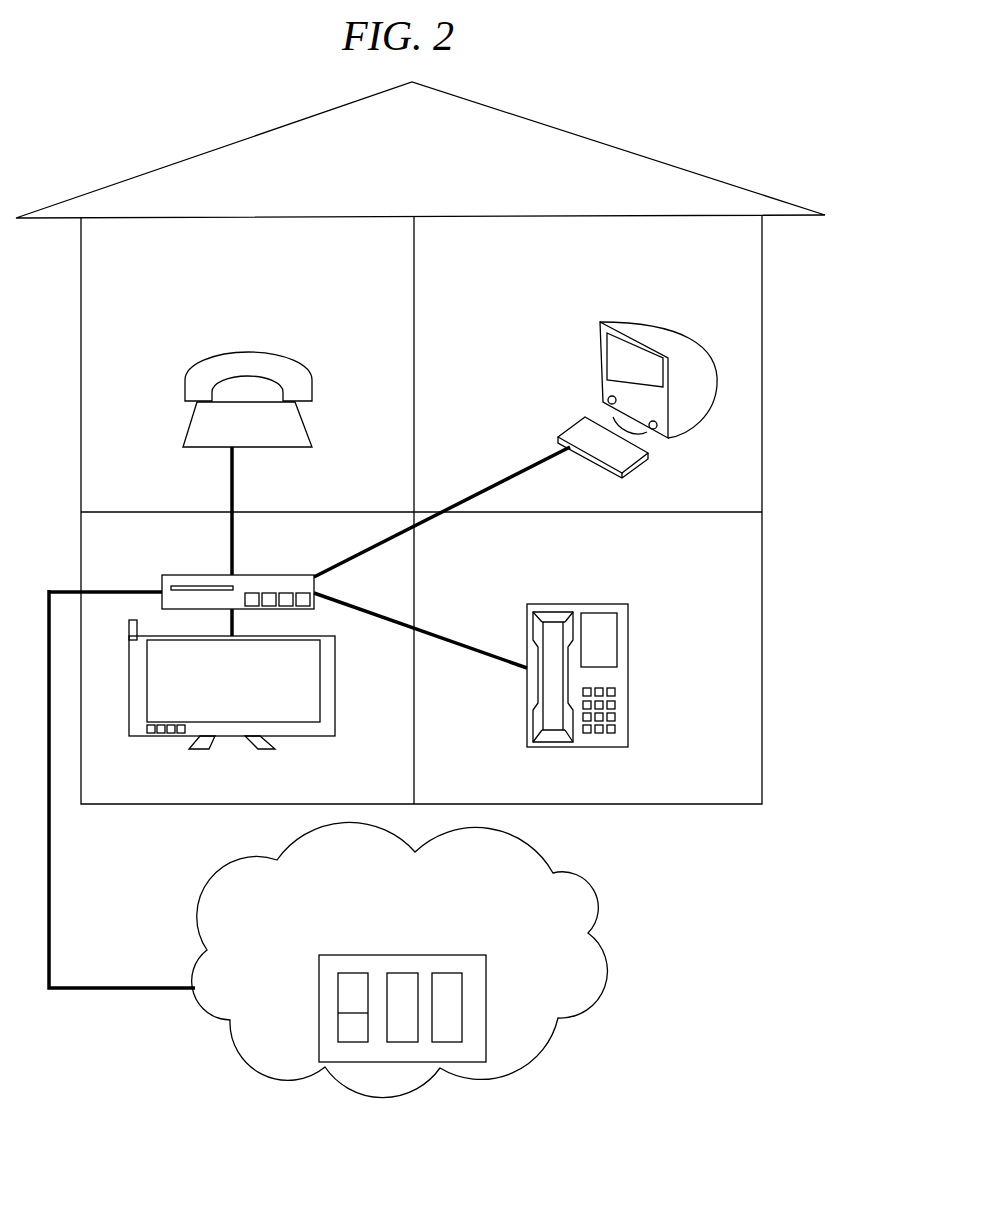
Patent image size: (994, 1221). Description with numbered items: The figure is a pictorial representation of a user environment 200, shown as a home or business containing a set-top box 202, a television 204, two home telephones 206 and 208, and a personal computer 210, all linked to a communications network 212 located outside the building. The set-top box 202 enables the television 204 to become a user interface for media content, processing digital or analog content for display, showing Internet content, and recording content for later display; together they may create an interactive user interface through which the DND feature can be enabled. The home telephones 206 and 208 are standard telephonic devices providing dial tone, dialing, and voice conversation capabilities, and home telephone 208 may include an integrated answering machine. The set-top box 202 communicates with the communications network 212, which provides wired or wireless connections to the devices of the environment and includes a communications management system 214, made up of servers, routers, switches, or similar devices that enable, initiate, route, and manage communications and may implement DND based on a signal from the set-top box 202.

The user environment 200 is at (96, 109).
The set-top box 202 is at (193, 574).
The television 204 is at (246, 685).
The home telephone 206 is at (266, 437).
The home telephone 208 is at (607, 604).
The personal computer 210 is at (616, 321).
The communications network 212 is at (416, 932).
The communications management system 214 is at (478, 1016).